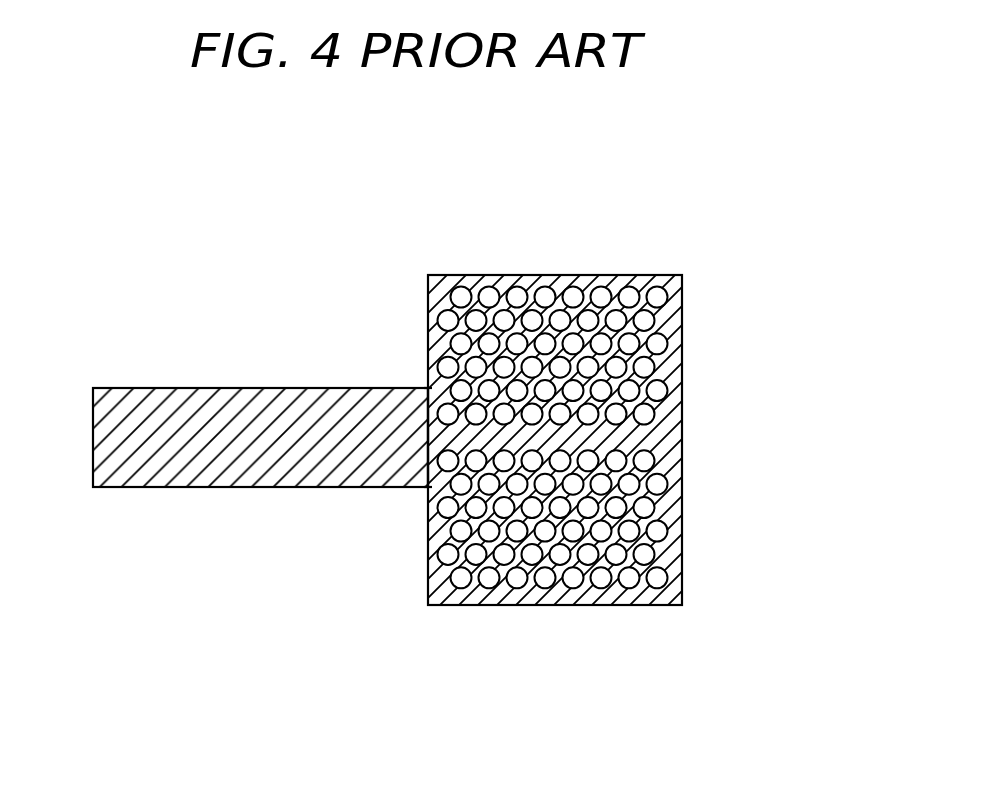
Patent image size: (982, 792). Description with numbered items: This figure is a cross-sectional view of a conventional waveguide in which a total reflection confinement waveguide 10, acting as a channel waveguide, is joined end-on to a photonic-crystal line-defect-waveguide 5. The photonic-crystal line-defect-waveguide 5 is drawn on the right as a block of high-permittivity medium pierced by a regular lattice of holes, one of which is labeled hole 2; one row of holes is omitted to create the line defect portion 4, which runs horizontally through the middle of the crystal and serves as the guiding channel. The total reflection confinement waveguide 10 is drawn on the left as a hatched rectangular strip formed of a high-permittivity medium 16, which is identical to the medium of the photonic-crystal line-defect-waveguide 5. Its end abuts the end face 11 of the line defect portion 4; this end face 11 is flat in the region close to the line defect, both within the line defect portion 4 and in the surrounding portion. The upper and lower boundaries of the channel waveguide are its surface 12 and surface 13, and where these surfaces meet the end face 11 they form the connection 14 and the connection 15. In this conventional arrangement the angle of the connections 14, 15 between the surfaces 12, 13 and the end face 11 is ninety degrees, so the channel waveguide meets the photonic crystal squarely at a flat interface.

The total reflection confinement waveguide 10 is at (167, 440).
The surface 12 is at (214, 388).
The surface 13 is at (174, 487).
The end face 11 is at (427, 427).
The connection 14 is at (428, 388).
The connection 15 is at (428, 487).
The high-permittivity medium 16 is at (563, 277).
The hole 2 is at (668, 346).
The line defect portion 4 is at (660, 440).
The photonic-crystal line-defect-waveguide 5 is at (653, 459).